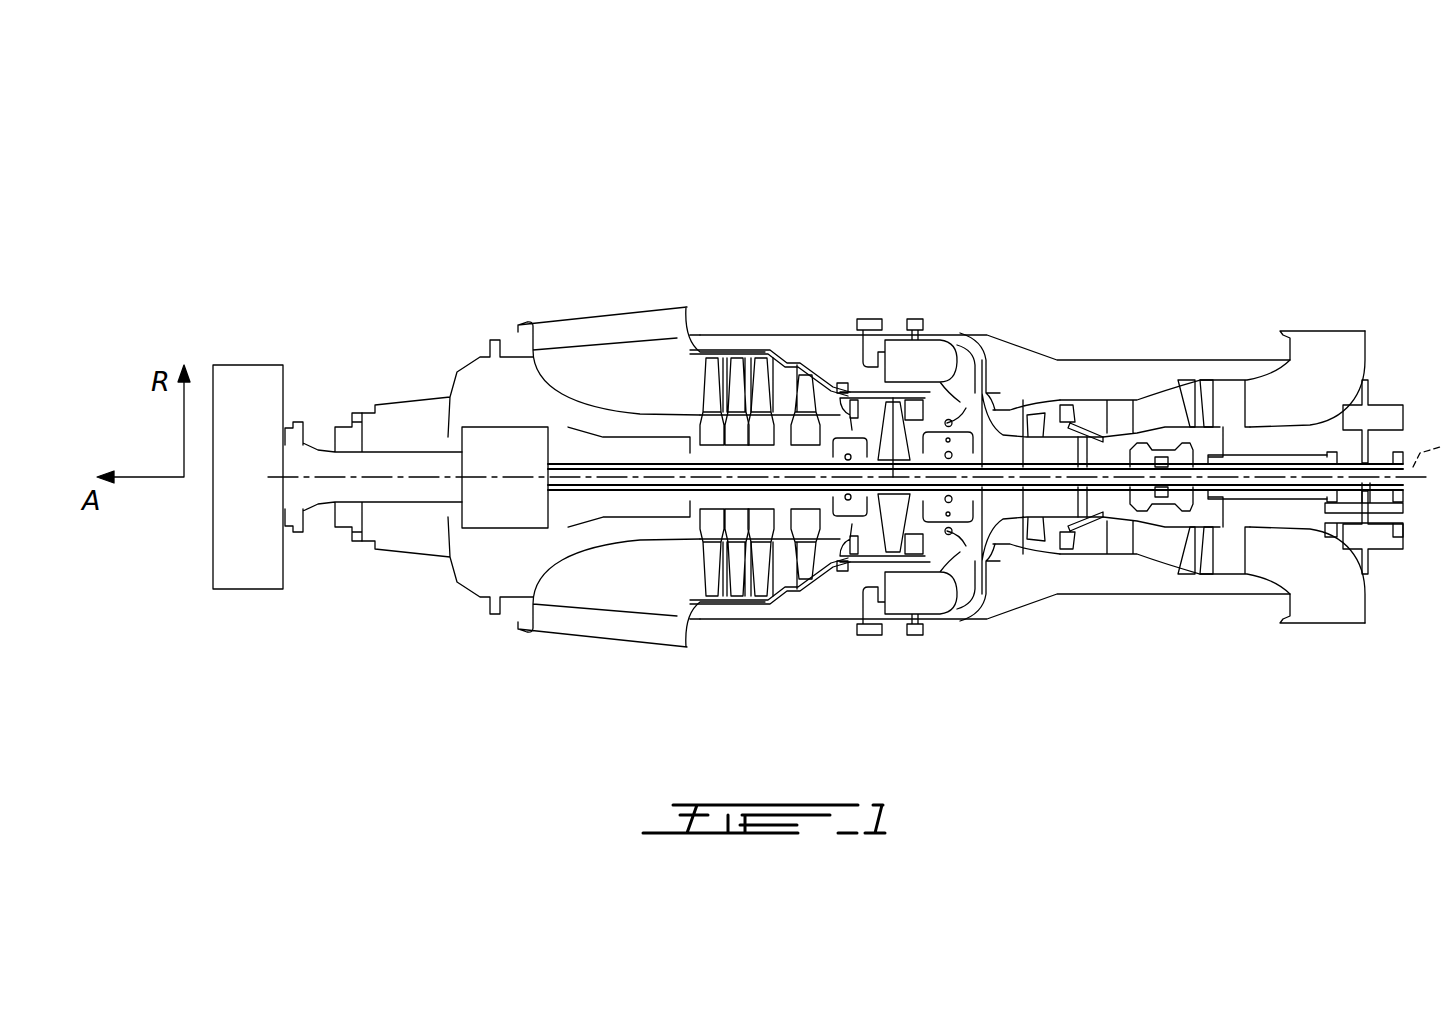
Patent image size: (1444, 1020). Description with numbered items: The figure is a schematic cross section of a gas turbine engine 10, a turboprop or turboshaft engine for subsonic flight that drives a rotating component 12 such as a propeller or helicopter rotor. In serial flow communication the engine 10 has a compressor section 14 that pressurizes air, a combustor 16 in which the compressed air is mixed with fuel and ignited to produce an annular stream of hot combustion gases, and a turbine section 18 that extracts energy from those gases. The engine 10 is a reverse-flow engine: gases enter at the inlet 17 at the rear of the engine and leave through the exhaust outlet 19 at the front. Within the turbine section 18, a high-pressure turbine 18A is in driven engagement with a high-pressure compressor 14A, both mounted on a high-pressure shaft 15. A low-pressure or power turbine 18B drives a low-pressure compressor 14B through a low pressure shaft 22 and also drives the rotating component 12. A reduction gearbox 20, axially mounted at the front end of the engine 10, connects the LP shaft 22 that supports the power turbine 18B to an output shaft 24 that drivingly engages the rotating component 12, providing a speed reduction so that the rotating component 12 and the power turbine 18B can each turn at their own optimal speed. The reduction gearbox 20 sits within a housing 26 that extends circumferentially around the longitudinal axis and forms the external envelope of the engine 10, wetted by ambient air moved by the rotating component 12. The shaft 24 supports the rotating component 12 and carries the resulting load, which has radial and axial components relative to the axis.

The gas turbine engine 10 is at (1307, 178).
The rotating component 12 is at (247, 567).
The compressor section 14 is at (1132, 383).
The high-pressure compressor 14A is at (1090, 548).
The low-pressure compressor 14B is at (1223, 557).
The high-pressure shaft 15 is at (993, 460).
The combustor 16 is at (937, 362).
The inlet 17 is at (1355, 305).
The turbine section 18 is at (800, 357).
The high-pressure turbine 18A is at (893, 477).
The power turbine 18B is at (761, 575).
The exhaust outlet 19 is at (622, 300).
The reduction gearbox 20 is at (482, 530).
The low pressure shaft 22 is at (603, 463).
The shaft 24 is at (387, 507).
The housing 26 is at (410, 395).